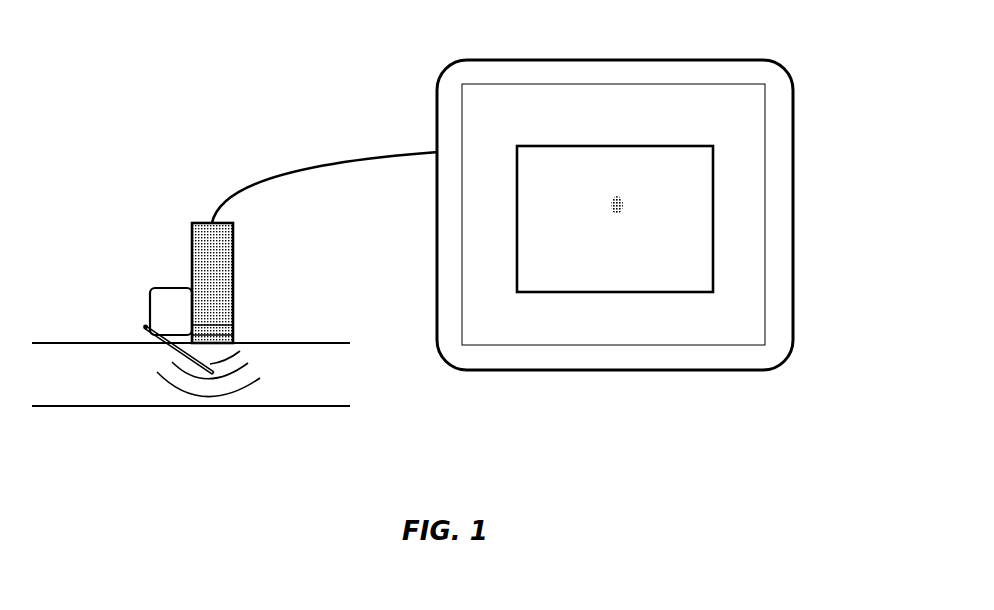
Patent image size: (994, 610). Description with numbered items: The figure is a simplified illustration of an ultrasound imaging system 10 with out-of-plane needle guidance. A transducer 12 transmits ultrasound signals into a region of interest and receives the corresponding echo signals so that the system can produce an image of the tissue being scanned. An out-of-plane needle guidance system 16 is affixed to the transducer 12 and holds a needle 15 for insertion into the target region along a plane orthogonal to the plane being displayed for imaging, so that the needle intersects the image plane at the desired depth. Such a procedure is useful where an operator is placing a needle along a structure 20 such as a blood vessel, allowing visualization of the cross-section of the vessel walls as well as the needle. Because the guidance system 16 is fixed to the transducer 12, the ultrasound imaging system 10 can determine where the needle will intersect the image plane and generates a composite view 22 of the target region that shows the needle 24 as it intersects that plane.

The ultrasound imaging system 10 is at (713, 68).
The transducer 12 is at (233, 268).
The needle 15 is at (147, 327).
The out-of-plane needle guidance system 16 is at (152, 290).
The structure 20 is at (288, 390).
The composite view 22 is at (692, 265).
The needle in composite view 24 is at (617, 205).